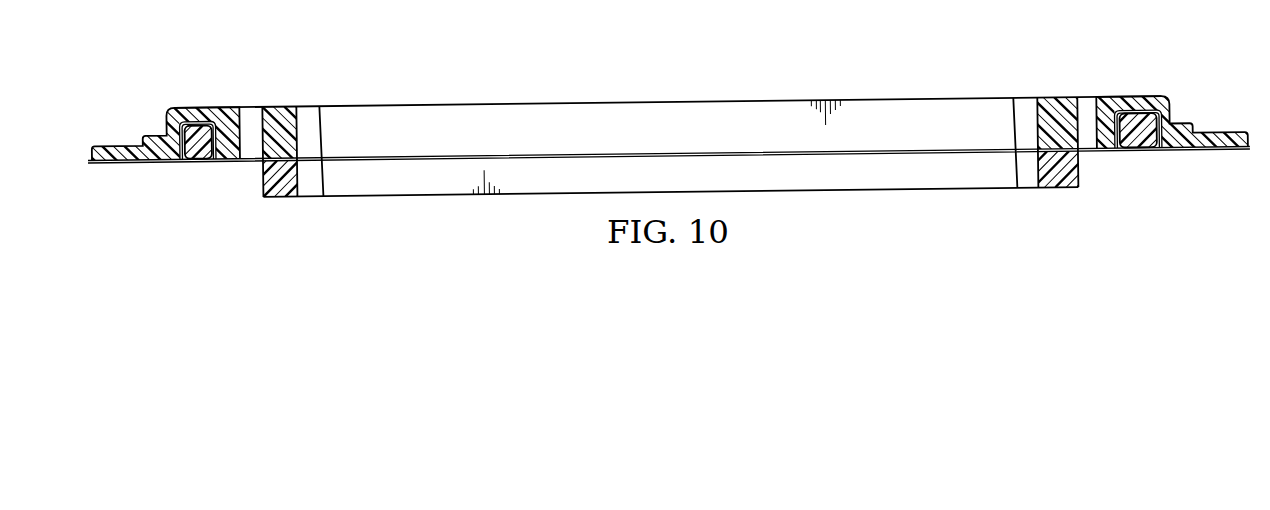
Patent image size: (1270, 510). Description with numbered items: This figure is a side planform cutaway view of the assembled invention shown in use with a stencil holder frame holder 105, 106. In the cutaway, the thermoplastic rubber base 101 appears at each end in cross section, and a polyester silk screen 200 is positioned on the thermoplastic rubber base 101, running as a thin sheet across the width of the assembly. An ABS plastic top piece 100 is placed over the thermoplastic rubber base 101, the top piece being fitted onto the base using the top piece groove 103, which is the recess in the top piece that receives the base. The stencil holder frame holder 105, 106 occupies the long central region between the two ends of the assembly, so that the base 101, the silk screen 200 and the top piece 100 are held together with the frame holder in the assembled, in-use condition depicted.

The ABS plastic top piece 100 is at (125, 136).
The thermoplastic rubber base 101 is at (202, 172).
The top piece groove 103 is at (191, 121).
The stencil holder frame holder 105 is at (874, 199).
The stencil holder frame holder 106 is at (942, 89).
The polyester silk screen 200 is at (507, 148).